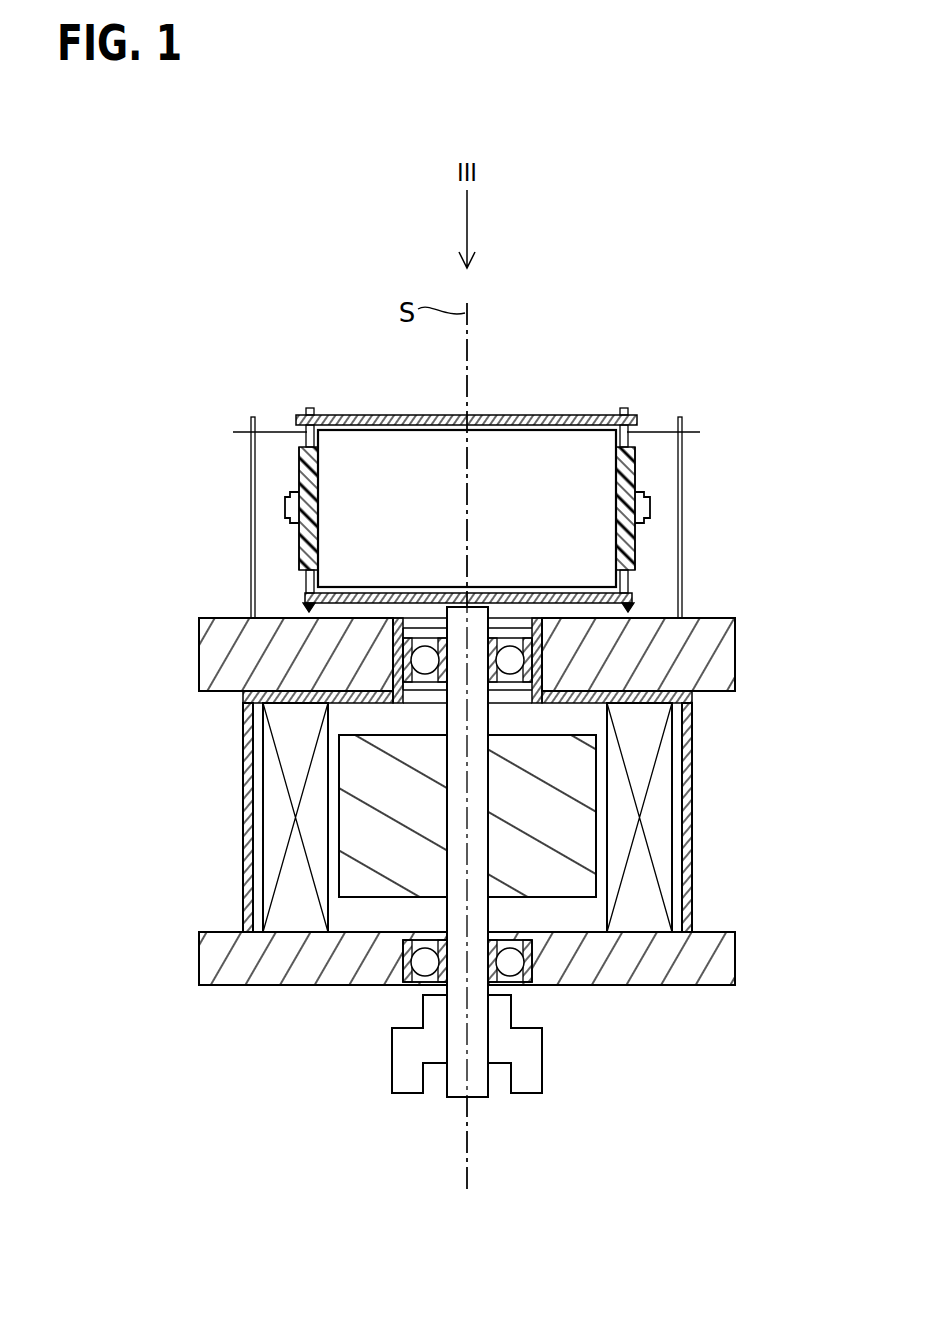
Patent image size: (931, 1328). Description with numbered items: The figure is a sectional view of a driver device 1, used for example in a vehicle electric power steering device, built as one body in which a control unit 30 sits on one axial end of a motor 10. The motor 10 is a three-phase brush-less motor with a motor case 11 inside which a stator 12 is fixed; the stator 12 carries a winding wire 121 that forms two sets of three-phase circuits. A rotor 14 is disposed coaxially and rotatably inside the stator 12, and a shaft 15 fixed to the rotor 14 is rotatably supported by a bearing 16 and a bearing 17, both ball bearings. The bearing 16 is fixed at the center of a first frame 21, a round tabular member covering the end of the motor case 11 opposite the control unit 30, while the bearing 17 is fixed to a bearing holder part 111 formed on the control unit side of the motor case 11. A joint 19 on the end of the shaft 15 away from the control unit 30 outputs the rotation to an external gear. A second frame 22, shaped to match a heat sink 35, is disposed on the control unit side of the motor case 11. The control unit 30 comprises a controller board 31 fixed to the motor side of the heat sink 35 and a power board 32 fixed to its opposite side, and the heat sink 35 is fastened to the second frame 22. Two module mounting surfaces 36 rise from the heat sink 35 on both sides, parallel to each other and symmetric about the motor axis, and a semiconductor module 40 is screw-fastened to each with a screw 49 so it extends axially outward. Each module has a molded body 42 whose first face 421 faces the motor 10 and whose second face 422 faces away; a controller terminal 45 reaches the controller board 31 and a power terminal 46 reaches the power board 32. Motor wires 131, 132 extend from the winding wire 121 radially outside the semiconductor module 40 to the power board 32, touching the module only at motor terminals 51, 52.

The driver device 1 is at (350, 1117).
The motor 10 is at (712, 855).
The motor case 11 is at (688, 784).
The stator 12 is at (633, 915).
The rotor 14 is at (571, 877).
The shaft 15 is at (460, 1085).
The bearing 16 is at (408, 985).
The bearing 17 is at (542, 675).
The joint 19 is at (530, 1085).
The first frame 21 is at (728, 962).
The second frame 22 is at (722, 680).
The control unit 30 is at (680, 390).
The controller board 31 is at (303, 598).
The power board 32 is at (388, 416).
The heat sink 35 is at (538, 453).
The module mounting surface 36 is at (300, 552).
The semiconductor module 40 is at (278, 467).
The molded body 42 is at (298, 473).
The controller terminal 45 is at (310, 612).
The power terminal 46 is at (308, 413).
The screw 49 is at (283, 505).
The motor terminal 51 is at (268, 432).
The motor terminal 52 is at (660, 432).
The bearing holder part 111 is at (397, 660).
The winding wire 121 is at (667, 897).
The motor wire 131 is at (251, 556).
The motor wire 132 is at (682, 557).
The first face 421 is at (303, 575).
The second face 422 is at (320, 413).